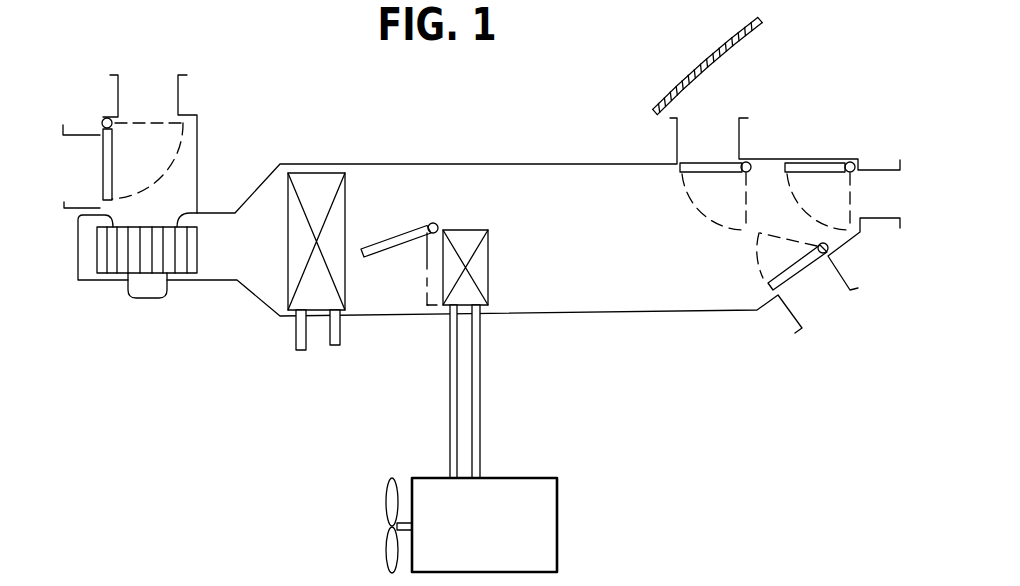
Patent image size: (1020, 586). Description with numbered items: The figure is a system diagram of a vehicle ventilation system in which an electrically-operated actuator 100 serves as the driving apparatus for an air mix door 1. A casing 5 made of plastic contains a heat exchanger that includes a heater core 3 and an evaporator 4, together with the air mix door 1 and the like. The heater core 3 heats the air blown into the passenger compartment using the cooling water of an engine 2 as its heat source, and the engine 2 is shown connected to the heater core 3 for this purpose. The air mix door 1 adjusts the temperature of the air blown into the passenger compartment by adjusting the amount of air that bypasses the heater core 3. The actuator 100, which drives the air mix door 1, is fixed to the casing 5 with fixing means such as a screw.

The air mix door 1 is at (380, 257).
The engine 2 is at (568, 522).
The heater core 3 is at (488, 276).
The evaporator 4 is at (313, 182).
The casing 5 is at (546, 160).
The actuator 100 is at (433, 223).